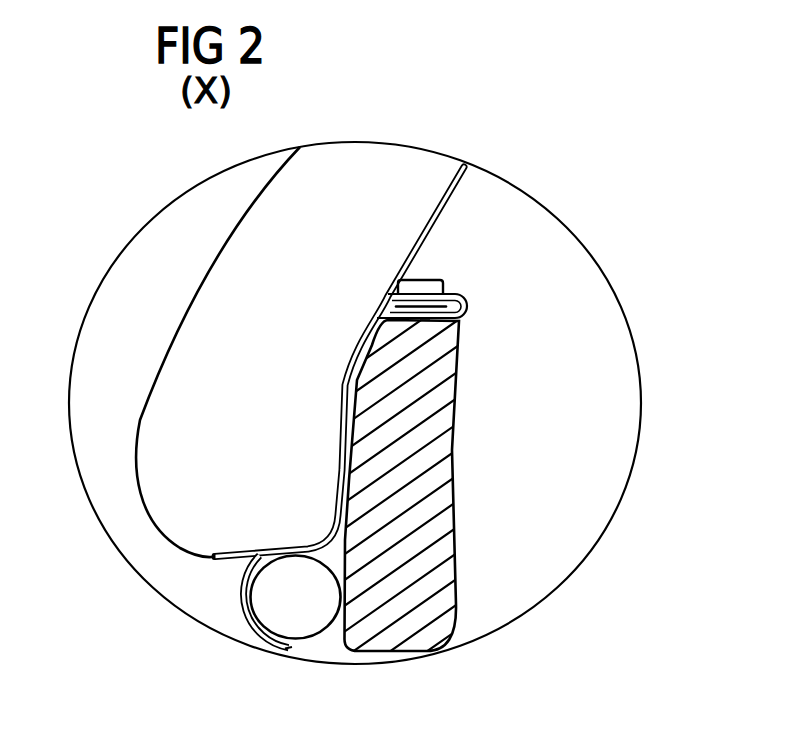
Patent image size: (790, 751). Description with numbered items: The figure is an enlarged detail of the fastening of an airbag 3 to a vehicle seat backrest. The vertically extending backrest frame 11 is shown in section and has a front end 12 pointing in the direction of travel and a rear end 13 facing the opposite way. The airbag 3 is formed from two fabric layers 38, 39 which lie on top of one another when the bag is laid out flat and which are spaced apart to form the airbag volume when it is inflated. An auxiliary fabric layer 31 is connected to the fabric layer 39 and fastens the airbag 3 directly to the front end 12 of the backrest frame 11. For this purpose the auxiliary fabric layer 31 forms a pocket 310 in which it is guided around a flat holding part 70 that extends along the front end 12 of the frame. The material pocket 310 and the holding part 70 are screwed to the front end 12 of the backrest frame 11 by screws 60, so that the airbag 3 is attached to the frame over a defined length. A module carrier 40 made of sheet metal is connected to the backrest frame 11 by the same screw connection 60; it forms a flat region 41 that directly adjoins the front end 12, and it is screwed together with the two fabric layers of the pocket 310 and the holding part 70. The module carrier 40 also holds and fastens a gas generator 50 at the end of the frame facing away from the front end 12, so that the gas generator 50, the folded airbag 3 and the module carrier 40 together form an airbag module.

The airbag 3 is at (163, 320).
The fabric layer 38 is at (223, 245).
The auxiliary fabric layer 31 is at (456, 200).
The fabric layer 39 is at (424, 232).
The screws 60 is at (420, 284).
The pocket 310 is at (469, 292).
The holding part 70 is at (471, 308).
The front end 12 is at (482, 328).
The flat region 41 is at (428, 318).
The backrest frame 11 is at (438, 443).
The module carrier 40 is at (243, 620).
The gas generator 50 is at (304, 628).
The rear end 13 is at (412, 650).